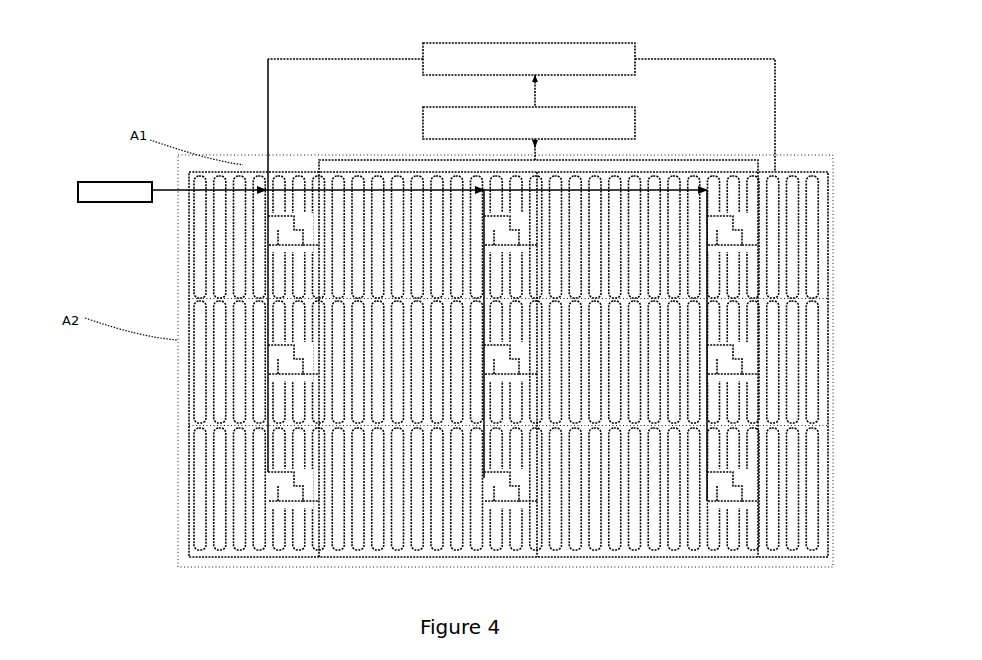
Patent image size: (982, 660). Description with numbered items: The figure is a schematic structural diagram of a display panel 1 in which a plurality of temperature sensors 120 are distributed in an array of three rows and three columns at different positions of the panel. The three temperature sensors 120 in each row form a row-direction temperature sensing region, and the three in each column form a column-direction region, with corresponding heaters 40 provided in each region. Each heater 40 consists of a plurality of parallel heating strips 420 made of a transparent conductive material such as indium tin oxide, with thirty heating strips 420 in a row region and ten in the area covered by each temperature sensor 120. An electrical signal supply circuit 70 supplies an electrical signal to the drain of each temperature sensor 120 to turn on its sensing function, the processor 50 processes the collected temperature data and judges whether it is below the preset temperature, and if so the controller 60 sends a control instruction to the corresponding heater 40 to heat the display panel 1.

The display panel 1 is at (167, 82).
The heater 40 is at (236, 465).
The processor 50 is at (636, 126).
The controller 60 is at (636, 62).
The electrical signal supply circuit 70 is at (84, 181).
The temperature sensor 120 is at (752, 226).
The heating strip 420 is at (818, 365).